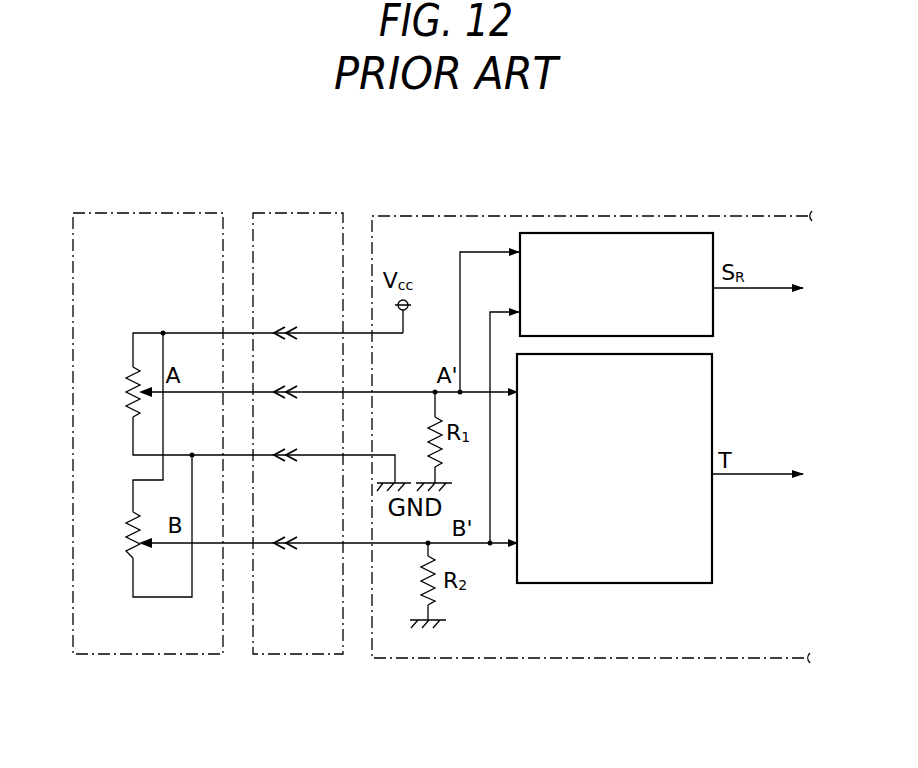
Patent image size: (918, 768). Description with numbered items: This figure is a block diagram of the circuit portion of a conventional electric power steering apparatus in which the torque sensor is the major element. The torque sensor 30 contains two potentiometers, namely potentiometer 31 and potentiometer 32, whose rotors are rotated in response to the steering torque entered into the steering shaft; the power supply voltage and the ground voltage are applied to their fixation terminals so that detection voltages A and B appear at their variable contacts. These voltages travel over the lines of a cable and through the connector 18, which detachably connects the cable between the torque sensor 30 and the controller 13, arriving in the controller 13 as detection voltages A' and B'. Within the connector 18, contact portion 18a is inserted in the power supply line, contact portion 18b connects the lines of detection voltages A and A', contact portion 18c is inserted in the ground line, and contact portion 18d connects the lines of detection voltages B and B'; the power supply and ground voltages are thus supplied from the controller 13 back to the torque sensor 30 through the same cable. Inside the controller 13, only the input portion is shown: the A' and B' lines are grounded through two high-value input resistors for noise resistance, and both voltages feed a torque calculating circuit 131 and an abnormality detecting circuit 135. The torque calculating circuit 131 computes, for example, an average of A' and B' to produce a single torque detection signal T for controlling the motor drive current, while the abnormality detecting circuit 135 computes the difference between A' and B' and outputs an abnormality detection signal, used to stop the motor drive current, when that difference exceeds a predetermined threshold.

The controller 13 is at (492, 216).
The connector 18 is at (286, 212).
The torque sensor 30 is at (146, 212).
The potentiometer 31 is at (130, 371).
The potentiometer 32 is at (130, 517).
The contact portion 18a is at (278, 326).
The contact portion 18b is at (280, 385).
The contact portion 18c is at (280, 448).
The contact portion 18d is at (280, 537).
The torque calculating circuit 131 is at (712, 570).
The abnormality detecting circuit 135 is at (713, 322).